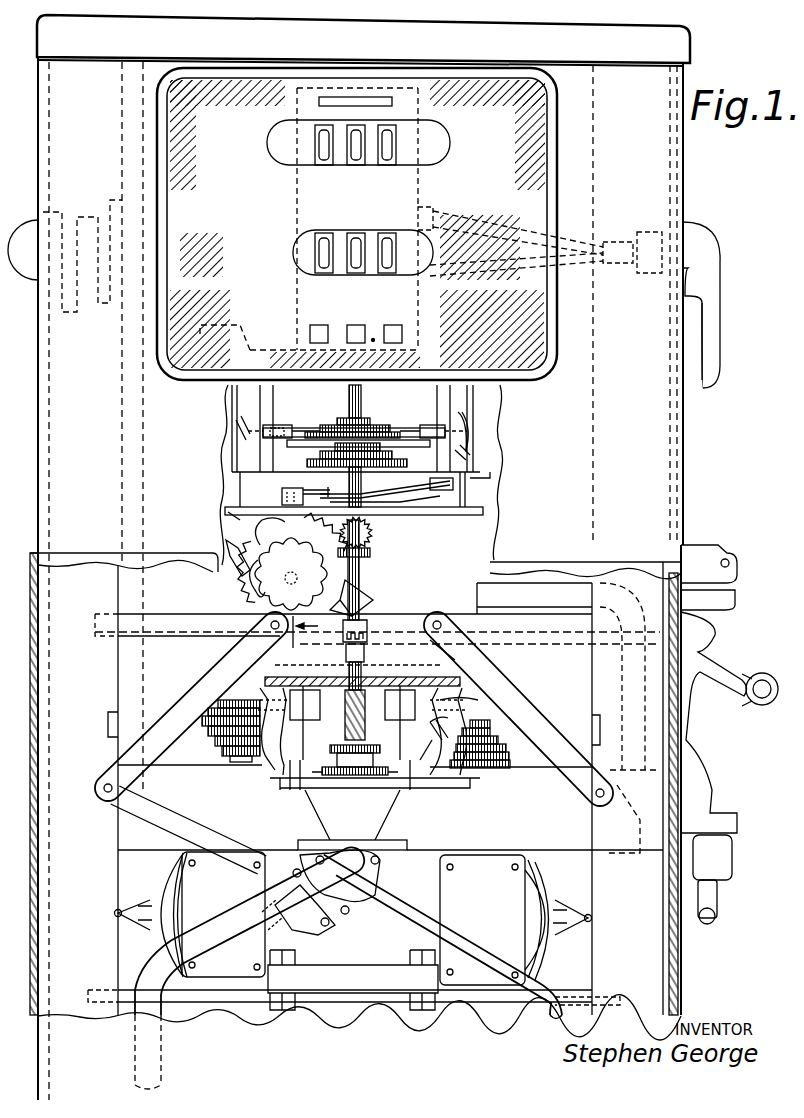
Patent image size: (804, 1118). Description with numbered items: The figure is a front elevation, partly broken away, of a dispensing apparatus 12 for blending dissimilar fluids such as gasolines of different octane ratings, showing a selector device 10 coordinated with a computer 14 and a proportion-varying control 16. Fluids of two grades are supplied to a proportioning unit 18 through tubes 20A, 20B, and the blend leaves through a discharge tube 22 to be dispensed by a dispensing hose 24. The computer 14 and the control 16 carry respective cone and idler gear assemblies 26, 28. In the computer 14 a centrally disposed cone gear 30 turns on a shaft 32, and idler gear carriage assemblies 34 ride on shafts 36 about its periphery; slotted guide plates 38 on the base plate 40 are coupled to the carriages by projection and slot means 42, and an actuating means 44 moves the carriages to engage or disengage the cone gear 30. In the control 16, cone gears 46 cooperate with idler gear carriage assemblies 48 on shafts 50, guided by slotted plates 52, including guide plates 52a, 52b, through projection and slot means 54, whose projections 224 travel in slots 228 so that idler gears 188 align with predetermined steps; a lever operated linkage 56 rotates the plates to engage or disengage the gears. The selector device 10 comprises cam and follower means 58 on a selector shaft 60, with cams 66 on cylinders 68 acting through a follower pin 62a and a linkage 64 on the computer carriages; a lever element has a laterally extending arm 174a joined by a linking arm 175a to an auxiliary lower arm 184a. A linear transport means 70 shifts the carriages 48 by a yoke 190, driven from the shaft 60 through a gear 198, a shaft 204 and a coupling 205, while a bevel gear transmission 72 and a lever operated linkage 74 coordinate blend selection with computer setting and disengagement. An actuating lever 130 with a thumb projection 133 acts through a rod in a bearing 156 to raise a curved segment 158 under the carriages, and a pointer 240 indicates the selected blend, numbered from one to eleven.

The selector device 10 is at (228, 528).
The dispensing apparatus 12 is at (692, 180).
The computer 14 is at (298, 296).
The proportion-varying control 16 is at (222, 706).
The proportioning unit 18 is at (380, 824).
The tube 20A is at (548, 1022).
The tube 20B is at (162, 1065).
The discharge tube 22 is at (122, 684).
The dispensing hose 24 is at (716, 903).
The cone and idler gear assembly 26 is at (383, 433).
The cone and idler gear assembly 28 is at (238, 694).
The cone gear 30 is at (363, 420).
The shaft 32 is at (349, 399).
The idler gear carriage assembly 34 is at (284, 427).
The shaft 36 is at (270, 405).
The slotted guide plate 38 is at (242, 428).
The base plate 40 is at (472, 480).
The projection and slot means 42 is at (470, 428).
The actuating means 44 is at (472, 415).
The cone gear 46 is at (210, 748).
The idler gear carriage assembly 48 is at (296, 680).
The shaft 50 is at (386, 828).
The slotted guide plate 52 is at (353, 918).
The guide plate 52a is at (445, 748).
The guide plate 52b is at (268, 748).
The projection and slot means 54 is at (450, 734).
The lever operated linkage 56 is at (328, 670).
The cam and follower means 58 is at (230, 620).
The selector shaft 60 is at (291, 574).
The follower pin 62a is at (280, 516).
The linkage 64 is at (374, 498).
The cam means 66 is at (228, 512).
The cylinder 68 is at (248, 598).
The linear transport means 70 is at (368, 656).
The bevel gear transmission 72 is at (372, 534).
The lever operated linkage 74 is at (316, 632).
The actuating lever 130 is at (373, 600).
The thumb projection 133 is at (213, 556).
The bearing 156 is at (352, 481).
The curved segment 158 is at (354, 424).
The laterally extending arm 174a is at (318, 486).
The linking arm 175a is at (385, 497).
The auxiliary lower arm 184a is at (464, 486).
The idler gear 188 is at (478, 680).
The yoke 190 is at (370, 720).
The gear 198 is at (232, 530).
The shaft 204 is at (355, 613).
The coupling 205 is at (370, 628).
The projection 224 is at (450, 730).
The slot 228 is at (276, 783).
The pointer 240 is at (292, 557).